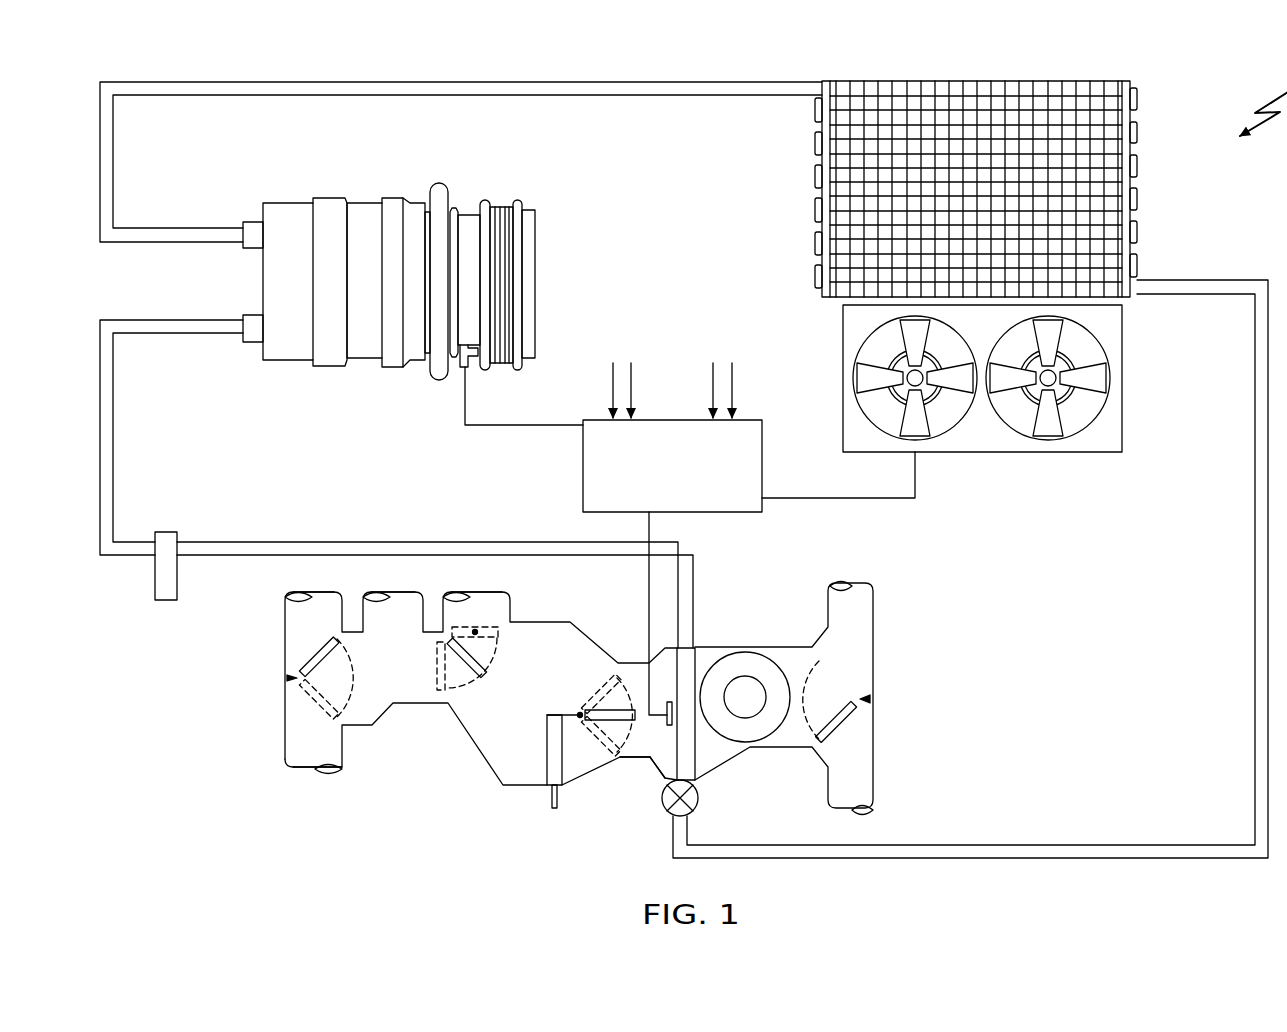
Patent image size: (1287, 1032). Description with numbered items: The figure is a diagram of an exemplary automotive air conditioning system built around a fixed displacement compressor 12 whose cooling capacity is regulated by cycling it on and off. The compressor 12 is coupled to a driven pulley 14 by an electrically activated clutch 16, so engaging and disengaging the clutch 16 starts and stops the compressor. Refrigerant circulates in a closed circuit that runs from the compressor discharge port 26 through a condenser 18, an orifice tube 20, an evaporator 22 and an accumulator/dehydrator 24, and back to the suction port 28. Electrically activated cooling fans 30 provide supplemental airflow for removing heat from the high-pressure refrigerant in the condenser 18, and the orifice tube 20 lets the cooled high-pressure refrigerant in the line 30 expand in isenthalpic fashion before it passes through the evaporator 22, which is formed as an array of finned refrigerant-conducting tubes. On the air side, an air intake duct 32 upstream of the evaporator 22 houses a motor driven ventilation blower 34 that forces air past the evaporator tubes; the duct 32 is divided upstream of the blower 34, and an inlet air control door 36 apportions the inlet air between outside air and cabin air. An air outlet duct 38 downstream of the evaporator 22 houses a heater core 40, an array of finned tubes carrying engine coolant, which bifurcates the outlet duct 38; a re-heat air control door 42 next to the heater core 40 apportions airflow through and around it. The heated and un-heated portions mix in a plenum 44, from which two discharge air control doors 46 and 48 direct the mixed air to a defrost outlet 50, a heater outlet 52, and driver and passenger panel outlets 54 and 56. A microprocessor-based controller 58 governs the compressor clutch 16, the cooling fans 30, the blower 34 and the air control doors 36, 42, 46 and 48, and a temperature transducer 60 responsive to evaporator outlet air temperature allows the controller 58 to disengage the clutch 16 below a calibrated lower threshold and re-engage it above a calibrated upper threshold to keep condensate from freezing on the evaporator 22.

The compressor 12 is at (317, 197).
The driven pulley 14 is at (515, 205).
The clutch 16 is at (537, 280).
The condenser 18 is at (1108, 78).
The orifice tube 20 is at (698, 803).
The evaporator 22 is at (696, 652).
The accumulator/dehydrator 24 is at (164, 602).
The compressor discharge port 26 is at (243, 222).
The compressor suction port 28 is at (244, 342).
The cooling fans 30 is at (1140, 421).
The air intake duct 32 is at (733, 754).
The ventilation blower 34 is at (758, 663).
The inlet air control door 36 is at (840, 735).
The air outlet duct 38 is at (656, 772).
The heater core 40 is at (548, 737).
The re-heat air control door 42 is at (610, 710).
The plenum 44 is at (497, 758).
The discharge air control door 46 is at (486, 662).
The discharge air control door 48 is at (304, 656).
The defrost outlet 50 is at (481, 612).
The heater outlet 52 is at (400, 612).
The driver panel outlet 54 is at (318, 612).
The passenger panel outlet 56 is at (308, 768).
The controller 58 is at (583, 475).
The temperature transducer 60 is at (658, 762).